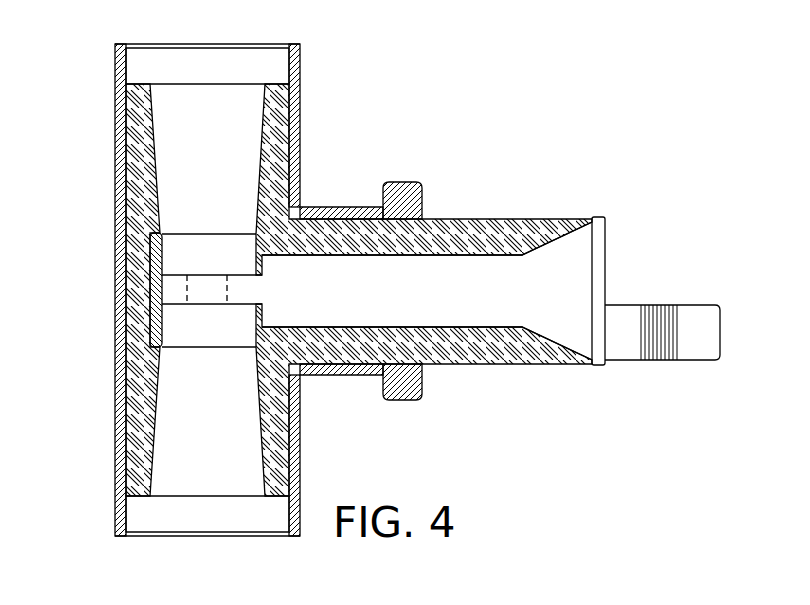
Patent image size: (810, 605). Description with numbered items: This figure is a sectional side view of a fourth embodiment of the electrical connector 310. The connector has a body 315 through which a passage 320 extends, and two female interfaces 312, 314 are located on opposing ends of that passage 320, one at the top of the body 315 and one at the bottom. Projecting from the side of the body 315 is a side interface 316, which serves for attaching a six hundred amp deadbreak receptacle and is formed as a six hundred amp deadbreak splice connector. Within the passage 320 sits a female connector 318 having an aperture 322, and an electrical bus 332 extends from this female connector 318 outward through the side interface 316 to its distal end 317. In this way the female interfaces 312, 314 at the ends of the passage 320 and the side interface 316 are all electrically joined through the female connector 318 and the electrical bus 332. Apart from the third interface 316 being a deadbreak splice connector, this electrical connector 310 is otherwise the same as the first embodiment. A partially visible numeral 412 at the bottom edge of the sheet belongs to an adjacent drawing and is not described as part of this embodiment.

The electrical connector 310 is at (116, 165).
The female interface 312 is at (270, 43).
The female interface 314 is at (152, 537).
The body 315 is at (300, 466).
The side interface 316 is at (632, 305).
The distal end 317 is at (606, 238).
The female connector 318 is at (172, 292).
The passage 320 is at (203, 380).
The aperture 322 is at (213, 272).
The electrical bus 332 is at (432, 313).
The valve assembly 412 is at (492, 599).